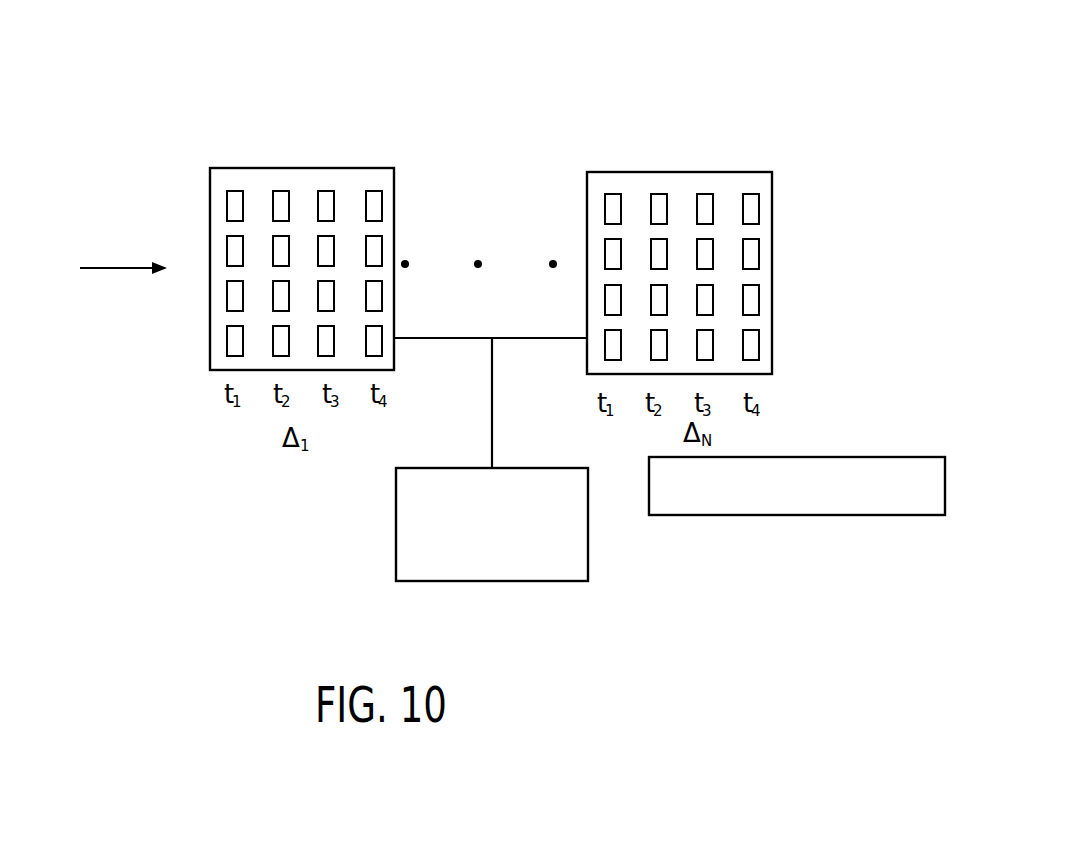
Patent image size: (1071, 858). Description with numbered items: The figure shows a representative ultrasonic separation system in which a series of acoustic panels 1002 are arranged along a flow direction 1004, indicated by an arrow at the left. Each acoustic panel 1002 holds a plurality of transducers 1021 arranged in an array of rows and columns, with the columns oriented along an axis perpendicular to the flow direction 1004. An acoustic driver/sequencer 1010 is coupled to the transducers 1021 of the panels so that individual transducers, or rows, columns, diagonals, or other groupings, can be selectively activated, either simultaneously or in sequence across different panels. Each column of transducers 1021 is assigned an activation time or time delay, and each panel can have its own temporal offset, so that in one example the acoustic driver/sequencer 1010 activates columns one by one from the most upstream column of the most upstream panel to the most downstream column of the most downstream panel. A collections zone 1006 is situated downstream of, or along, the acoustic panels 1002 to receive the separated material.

The acoustic panel 1002 is at (690, 145).
The transducer 1021 is at (381, 207).
The flow direction 1004 is at (117, 268).
The acoustic driver/sequencer 1010 is at (396, 537).
The collections zone 1006 is at (783, 516).